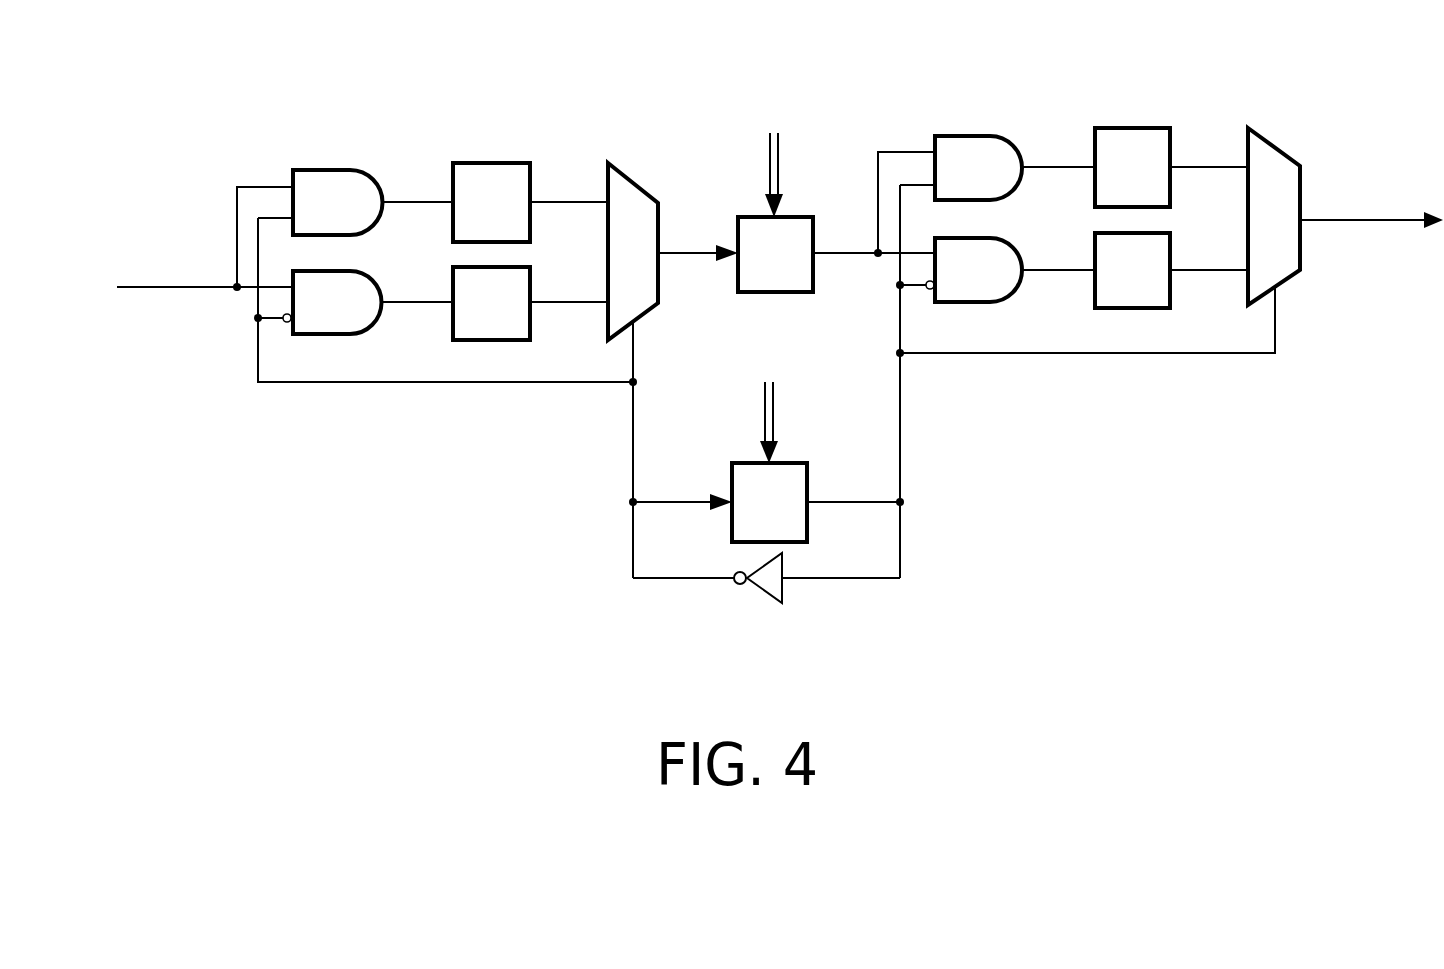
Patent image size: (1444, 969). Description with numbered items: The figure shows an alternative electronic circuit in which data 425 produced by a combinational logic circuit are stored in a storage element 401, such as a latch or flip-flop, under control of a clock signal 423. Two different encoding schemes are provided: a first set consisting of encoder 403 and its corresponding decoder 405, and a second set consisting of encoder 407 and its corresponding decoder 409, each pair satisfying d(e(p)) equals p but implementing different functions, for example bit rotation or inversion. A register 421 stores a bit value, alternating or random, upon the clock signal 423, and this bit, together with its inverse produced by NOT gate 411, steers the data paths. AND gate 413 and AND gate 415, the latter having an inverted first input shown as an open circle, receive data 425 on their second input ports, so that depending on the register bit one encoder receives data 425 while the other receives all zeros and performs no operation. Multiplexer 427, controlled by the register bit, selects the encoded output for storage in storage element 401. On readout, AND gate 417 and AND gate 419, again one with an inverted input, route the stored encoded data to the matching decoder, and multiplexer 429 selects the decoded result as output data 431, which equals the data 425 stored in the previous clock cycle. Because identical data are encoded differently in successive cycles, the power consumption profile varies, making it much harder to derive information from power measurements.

The storage element 401 is at (776, 293).
The encoder 403 is at (492, 163).
The decoder 405 is at (1133, 128).
The encoder 407 is at (532, 324).
The decoder 409 is at (1172, 290).
The NOT gate 411 is at (760, 596).
The AND gate 413 is at (321, 170).
The AND gate 415 is at (372, 326).
The AND gate 417 is at (962, 136).
The AND gate 419 is at (1013, 290).
The register 421 is at (809, 478).
The clock signal 423 is at (780, 163).
The data 425 is at (175, 290).
The multiplexer 427 is at (636, 178).
The multiplexer 429 is at (1276, 142).
The output data 431 is at (1366, 222).